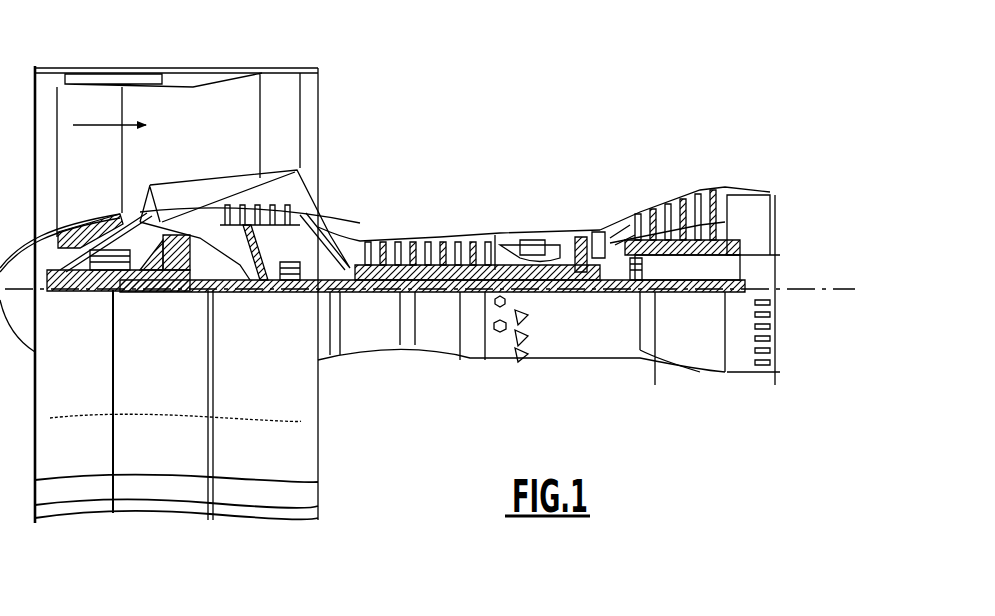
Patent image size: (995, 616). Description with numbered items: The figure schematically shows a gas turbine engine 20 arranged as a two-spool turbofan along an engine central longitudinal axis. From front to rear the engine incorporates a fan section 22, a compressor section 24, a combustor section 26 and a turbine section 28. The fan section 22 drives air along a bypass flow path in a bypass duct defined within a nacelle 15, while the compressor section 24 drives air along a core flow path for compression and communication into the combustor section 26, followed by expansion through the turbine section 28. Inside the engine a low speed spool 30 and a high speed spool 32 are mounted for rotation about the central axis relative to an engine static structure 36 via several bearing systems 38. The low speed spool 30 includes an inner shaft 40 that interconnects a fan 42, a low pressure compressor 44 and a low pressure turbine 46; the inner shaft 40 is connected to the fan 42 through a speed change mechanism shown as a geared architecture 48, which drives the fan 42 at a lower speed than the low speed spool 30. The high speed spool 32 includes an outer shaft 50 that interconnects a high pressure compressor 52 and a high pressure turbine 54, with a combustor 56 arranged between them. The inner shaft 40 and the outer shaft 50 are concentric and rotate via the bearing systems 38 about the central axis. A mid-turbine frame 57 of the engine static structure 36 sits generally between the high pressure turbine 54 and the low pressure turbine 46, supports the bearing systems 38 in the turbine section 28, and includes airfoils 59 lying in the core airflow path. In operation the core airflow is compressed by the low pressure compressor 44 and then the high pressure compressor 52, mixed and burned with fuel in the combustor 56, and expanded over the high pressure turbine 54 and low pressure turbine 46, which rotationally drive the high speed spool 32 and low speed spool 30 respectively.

The nacelle 15 is at (180, 70).
The gas turbine engine 20 is at (542, 102).
The fan section 22 is at (121, 58).
The compressor section 24 is at (355, 206).
The combustor section 26 is at (531, 208).
The turbine section 28 is at (647, 176).
The low speed spool 30 is at (444, 298).
The high speed spool 32 is at (475, 240).
The engine static structure 36 is at (475, 356).
The bearing systems 38 is at (290, 285).
The inner shaft 40 is at (335, 360).
The fan 42 is at (108, 170).
The low pressure compressor 44 is at (268, 205).
The low pressure turbine 46 is at (683, 192).
The geared architecture 48 is at (178, 285).
The outer shaft 50 is at (538, 285).
The high pressure compressor 52 is at (427, 243).
The high pressure turbine 54 is at (587, 230).
The combustor 56 is at (537, 243).
The mid-turbine frame 57 is at (619, 212).
The airfoils 59 is at (645, 262).